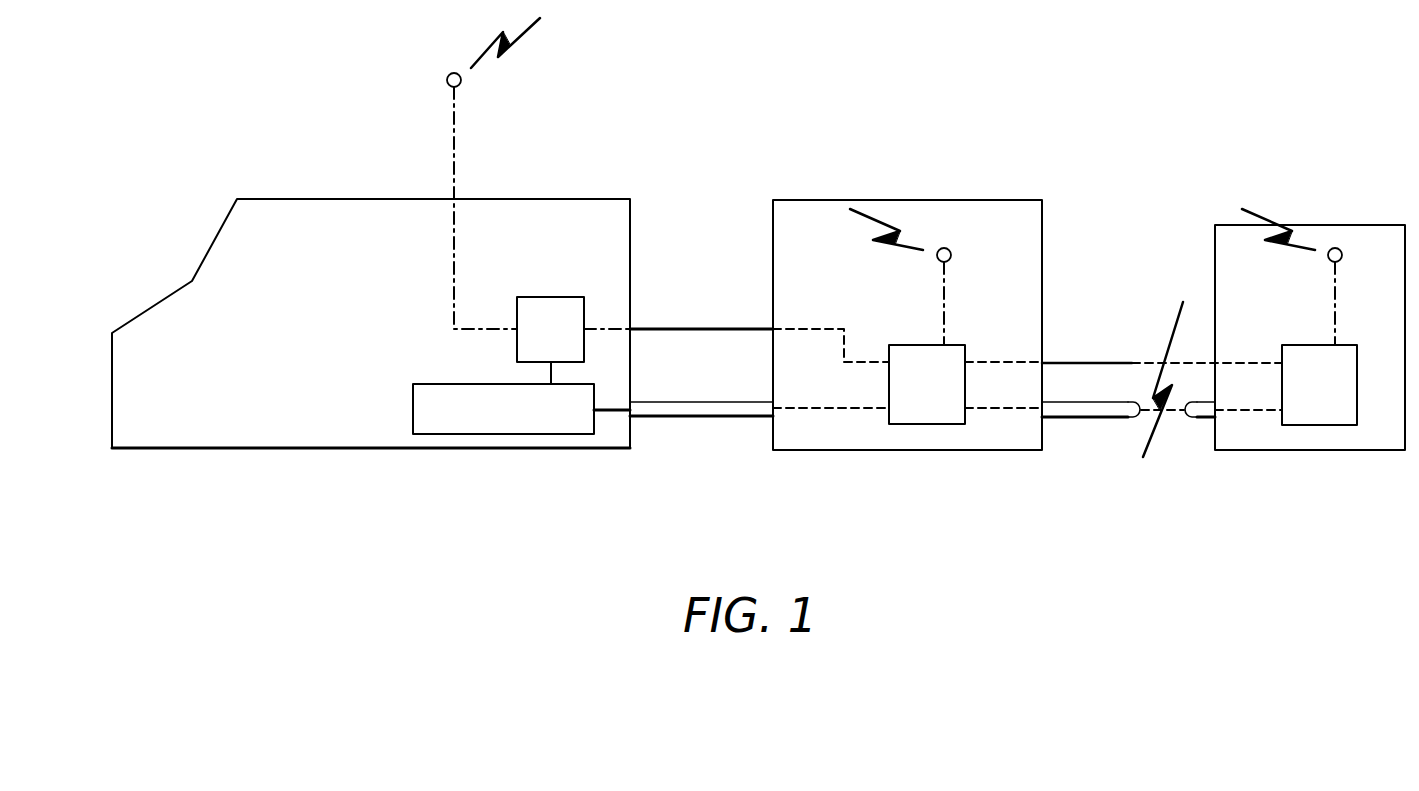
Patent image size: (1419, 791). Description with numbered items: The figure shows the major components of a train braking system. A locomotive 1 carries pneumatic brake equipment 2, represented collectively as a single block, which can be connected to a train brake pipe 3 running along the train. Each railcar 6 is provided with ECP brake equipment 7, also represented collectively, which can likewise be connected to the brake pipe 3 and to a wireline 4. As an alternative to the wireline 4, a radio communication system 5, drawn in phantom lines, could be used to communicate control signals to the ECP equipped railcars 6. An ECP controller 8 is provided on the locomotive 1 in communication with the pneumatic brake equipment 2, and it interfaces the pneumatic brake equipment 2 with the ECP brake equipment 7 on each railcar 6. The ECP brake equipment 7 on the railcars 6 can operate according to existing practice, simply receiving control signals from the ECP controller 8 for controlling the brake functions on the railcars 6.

The locomotive 1 is at (302, 222).
The pneumatic brake equipment 2 is at (433, 416).
The train brake pipe 3 is at (690, 419).
The wireline 4 is at (703, 328).
The radio communication system 5 is at (456, 141).
The railcar 6 is at (892, 214).
The ECP brake equipment 7 is at (924, 410).
The ECP controller 8 is at (545, 310).